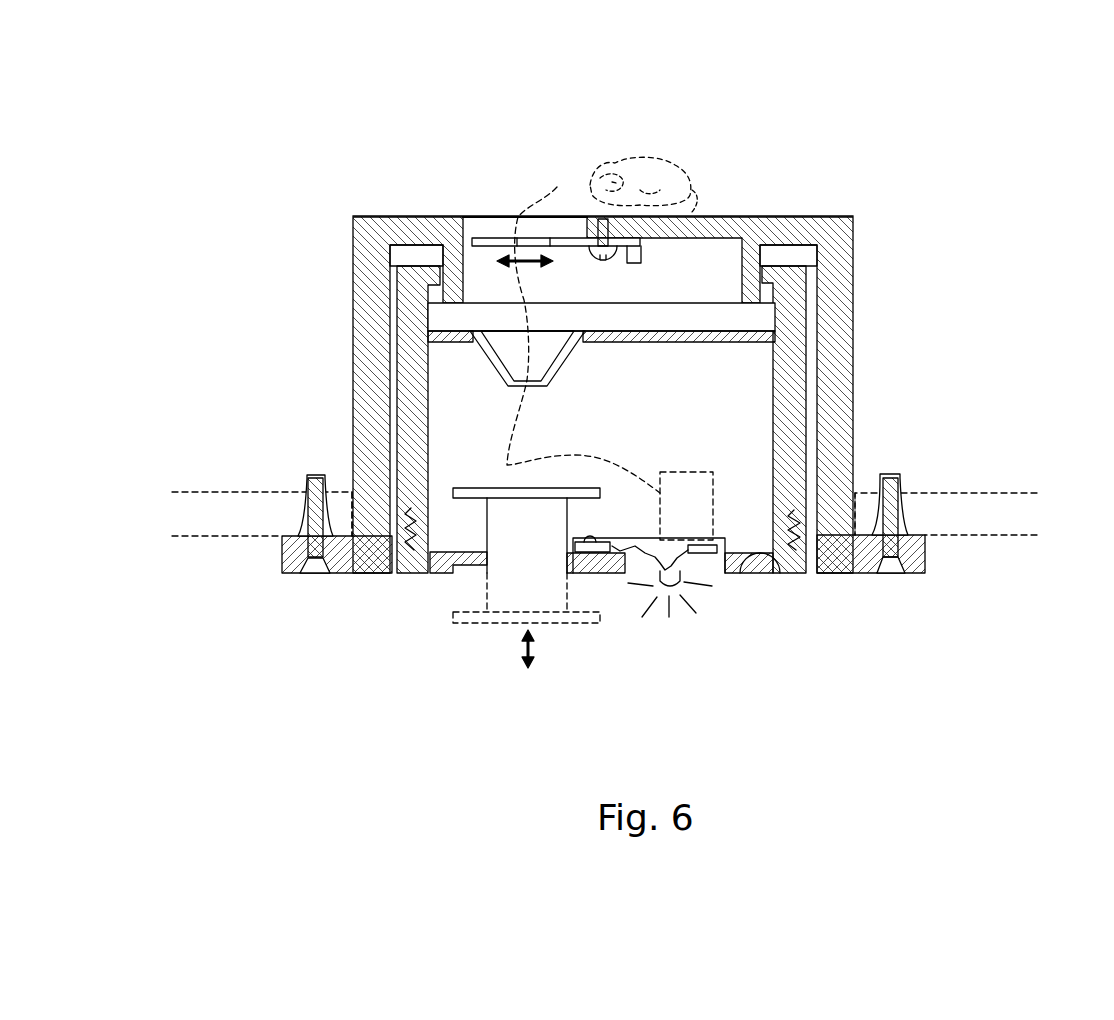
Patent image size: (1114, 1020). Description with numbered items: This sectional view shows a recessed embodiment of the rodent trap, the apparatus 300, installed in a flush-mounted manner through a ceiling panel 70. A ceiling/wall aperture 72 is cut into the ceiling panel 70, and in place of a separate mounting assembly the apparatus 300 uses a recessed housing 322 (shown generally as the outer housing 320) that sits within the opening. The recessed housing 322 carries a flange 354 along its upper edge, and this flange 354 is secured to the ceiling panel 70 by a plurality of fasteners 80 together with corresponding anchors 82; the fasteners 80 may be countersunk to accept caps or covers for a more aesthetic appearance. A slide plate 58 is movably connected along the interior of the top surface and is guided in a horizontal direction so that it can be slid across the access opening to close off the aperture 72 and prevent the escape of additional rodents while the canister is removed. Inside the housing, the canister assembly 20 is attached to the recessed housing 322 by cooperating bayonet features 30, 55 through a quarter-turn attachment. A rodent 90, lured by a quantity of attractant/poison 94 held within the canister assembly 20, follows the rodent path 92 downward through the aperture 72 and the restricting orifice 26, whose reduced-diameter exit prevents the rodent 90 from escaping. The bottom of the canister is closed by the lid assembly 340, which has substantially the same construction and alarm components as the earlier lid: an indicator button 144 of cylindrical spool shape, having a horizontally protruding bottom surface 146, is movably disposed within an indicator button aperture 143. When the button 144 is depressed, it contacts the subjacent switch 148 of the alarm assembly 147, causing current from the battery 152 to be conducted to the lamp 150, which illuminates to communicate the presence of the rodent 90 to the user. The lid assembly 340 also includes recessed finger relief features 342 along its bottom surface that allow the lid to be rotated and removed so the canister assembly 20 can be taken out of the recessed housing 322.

The apparatus 300 is at (868, 182).
The outer housing 320 is at (350, 358).
The recessed housing 322 is at (355, 227).
The bayonet feature 30 is at (437, 270).
The canister assembly 20 is at (400, 422).
The lid assembly 340 is at (412, 582).
The bayonet feature 55 is at (427, 293).
The restricting orifice 26 is at (560, 360).
The slide plate 58 is at (502, 237).
The rodent path 92 is at (557, 187).
The rodent 90 is at (660, 160).
The attractant/poison 94 is at (686, 472).
The alarm assembly 147 is at (642, 537).
The switch 148 is at (597, 550).
The battery 152 is at (703, 557).
The lamp 150 is at (673, 587).
The recessed finger relief feature 342 is at (772, 573).
The indicator button aperture 143 is at (483, 565).
The indicator button 144 is at (532, 530).
The bottom surface 146 is at (528, 573).
The ceiling panel 70 is at (200, 492).
The flange 354 is at (285, 575).
The ceiling/wall aperture 72 is at (352, 492).
The fastener 80 is at (307, 490).
The anchor 82 is at (308, 478).